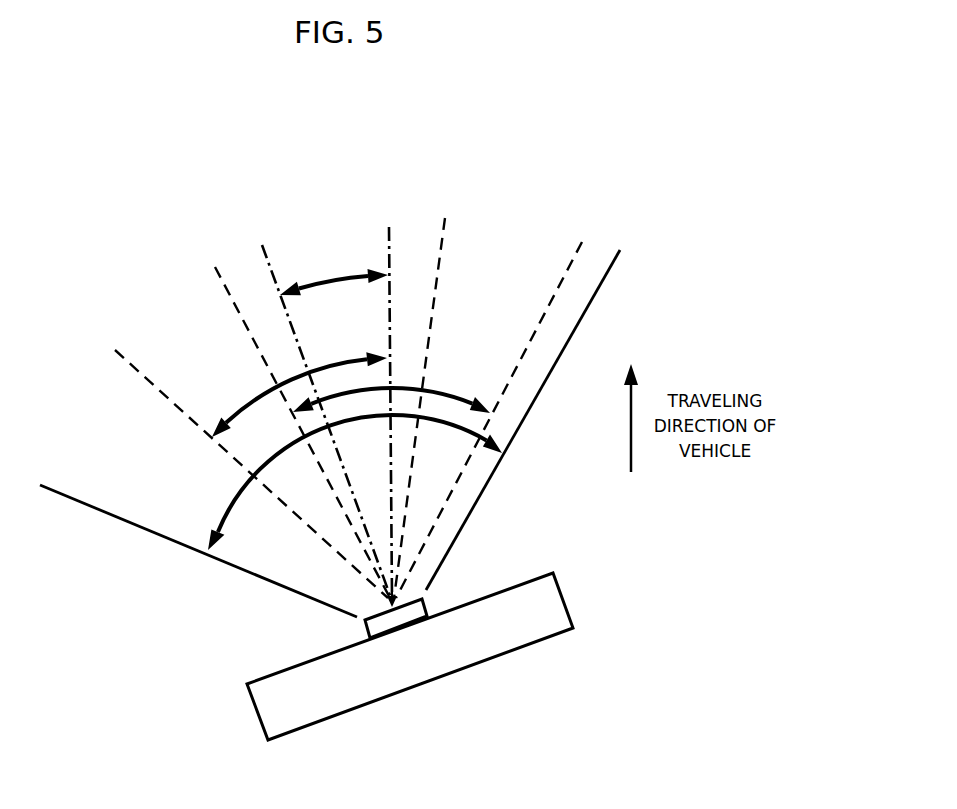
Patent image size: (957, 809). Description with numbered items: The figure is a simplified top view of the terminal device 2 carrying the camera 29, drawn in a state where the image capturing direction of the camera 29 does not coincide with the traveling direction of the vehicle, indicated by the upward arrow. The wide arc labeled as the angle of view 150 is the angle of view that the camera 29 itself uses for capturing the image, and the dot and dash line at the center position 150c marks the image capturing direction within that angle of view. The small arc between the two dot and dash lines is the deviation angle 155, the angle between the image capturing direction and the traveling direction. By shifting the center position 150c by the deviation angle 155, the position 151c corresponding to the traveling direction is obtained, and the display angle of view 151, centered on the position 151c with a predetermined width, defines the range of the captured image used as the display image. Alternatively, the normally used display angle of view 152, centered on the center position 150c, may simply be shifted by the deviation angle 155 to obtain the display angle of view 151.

The center position 150c is at (277, 283).
The position corresponding to the traveling direction 151c is at (392, 260).
The deviation angle 155 is at (342, 270).
The display angle of view normally used 152 is at (248, 400).
The display angle of view 151 is at (447, 393).
The angle of view 150 is at (230, 503).
The camera 29 is at (417, 613).
The terminal device 2 is at (548, 607).